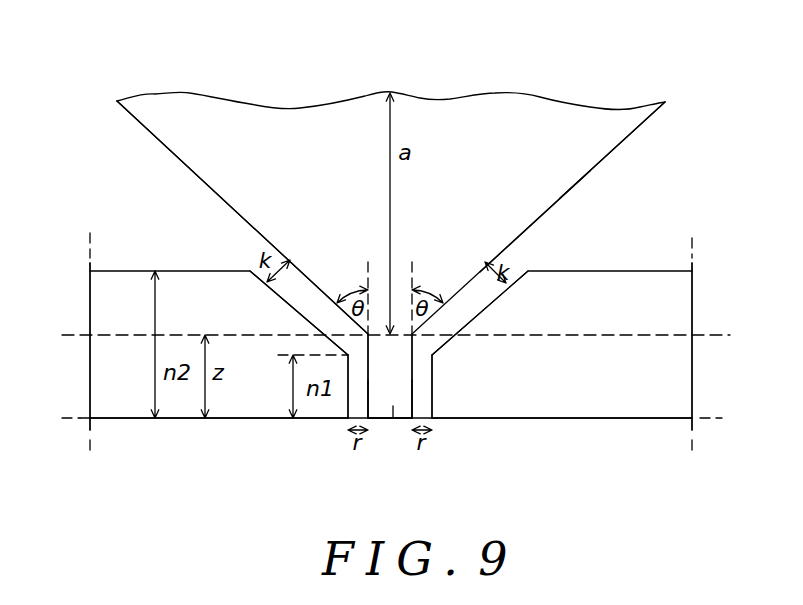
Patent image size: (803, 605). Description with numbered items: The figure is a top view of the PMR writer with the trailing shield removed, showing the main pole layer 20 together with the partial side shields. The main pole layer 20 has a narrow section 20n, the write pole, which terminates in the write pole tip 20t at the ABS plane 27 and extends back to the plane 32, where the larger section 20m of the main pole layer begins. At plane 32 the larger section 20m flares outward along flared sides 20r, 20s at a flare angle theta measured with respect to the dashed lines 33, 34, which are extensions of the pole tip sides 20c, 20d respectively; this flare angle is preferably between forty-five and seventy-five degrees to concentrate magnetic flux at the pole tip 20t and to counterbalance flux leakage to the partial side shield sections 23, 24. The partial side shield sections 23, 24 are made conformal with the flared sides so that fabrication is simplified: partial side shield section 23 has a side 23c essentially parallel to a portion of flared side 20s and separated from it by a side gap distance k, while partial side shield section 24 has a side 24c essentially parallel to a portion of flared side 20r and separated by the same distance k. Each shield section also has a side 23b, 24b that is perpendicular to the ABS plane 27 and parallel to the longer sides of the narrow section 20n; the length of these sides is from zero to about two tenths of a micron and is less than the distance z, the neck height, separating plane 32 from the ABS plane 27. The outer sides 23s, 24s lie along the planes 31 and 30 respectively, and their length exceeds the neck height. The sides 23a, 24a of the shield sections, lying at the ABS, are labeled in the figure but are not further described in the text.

The main pole layer 20 is at (665, 79).
The flared side 20s is at (210, 186).
The larger section 20m is at (586, 149).
The flared side 20r is at (574, 183).
The pole tip side 20c is at (368, 398).
The pole tip side 20d is at (412, 392).
The write pole tip 20t is at (382, 418).
The narrow section 20n is at (393, 406).
The partial side shield section 23 is at (98, 293).
The side 23s is at (90, 362).
The bottom surface of left side shield 23a is at (185, 418).
The side 23b is at (348, 395).
The side 23c is at (290, 310).
The partial side shield section 24 is at (683, 295).
The side 24s is at (692, 365).
The bottom surface of right side shield 24a is at (645, 422).
The side 24b is at (432, 365).
The side 24c is at (475, 330).
The ABS plane 27 is at (393, 419).
The plane 32 is at (393, 334).
The plane 31 is at (92, 340).
The plane 30 is at (694, 349).
The dashed line 33 is at (363, 287).
The dashed line 34 is at (417, 287).